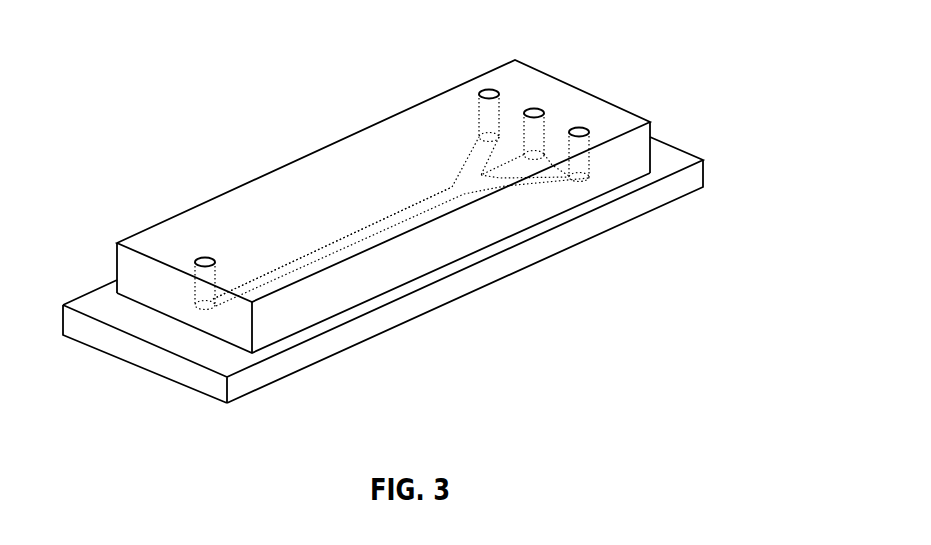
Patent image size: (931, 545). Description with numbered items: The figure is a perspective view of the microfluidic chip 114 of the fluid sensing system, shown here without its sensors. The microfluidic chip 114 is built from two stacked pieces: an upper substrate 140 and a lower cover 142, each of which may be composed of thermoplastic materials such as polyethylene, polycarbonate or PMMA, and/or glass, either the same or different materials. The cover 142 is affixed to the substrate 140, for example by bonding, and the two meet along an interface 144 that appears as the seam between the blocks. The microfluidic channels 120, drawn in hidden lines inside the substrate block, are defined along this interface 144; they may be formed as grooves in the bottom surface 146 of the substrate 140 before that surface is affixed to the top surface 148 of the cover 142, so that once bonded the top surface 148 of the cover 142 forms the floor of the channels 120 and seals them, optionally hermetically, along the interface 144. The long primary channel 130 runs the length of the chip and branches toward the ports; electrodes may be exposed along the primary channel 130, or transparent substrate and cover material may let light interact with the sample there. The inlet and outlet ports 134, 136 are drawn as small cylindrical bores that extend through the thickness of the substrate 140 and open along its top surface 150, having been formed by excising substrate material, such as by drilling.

The microfluidic chip 114 is at (264, 60).
The microfluidic channels 120 is at (270, 262).
The primary channel 130 is at (371, 215).
The inlet ports 134 is at (480, 82).
The outlet port 136 is at (199, 247).
The substrate 140 is at (622, 118).
The cover 142 is at (675, 187).
The interface 144 is at (438, 279).
The bottom surface of the substrate 146 is at (208, 335).
The top surface of the cover 148 is at (667, 157).
The top surface of the substrate 150 is at (572, 97).